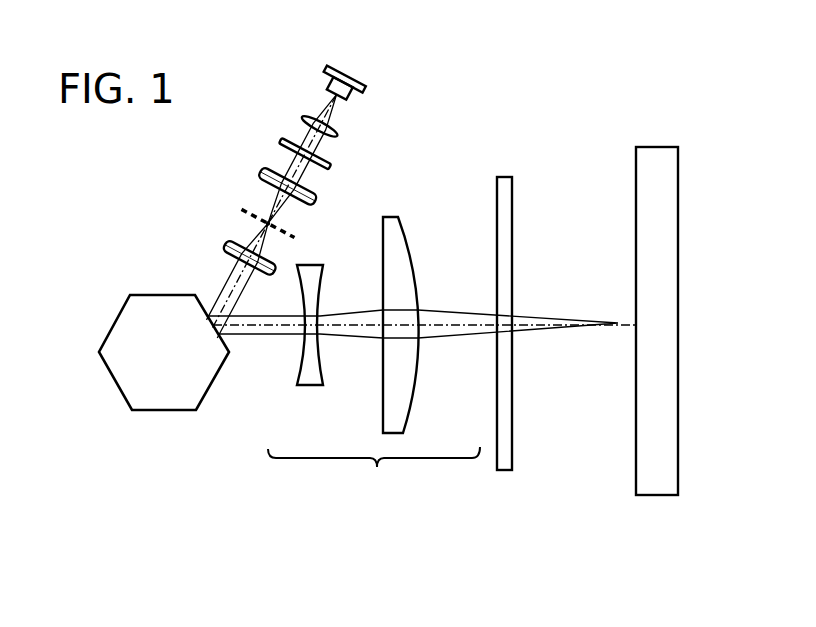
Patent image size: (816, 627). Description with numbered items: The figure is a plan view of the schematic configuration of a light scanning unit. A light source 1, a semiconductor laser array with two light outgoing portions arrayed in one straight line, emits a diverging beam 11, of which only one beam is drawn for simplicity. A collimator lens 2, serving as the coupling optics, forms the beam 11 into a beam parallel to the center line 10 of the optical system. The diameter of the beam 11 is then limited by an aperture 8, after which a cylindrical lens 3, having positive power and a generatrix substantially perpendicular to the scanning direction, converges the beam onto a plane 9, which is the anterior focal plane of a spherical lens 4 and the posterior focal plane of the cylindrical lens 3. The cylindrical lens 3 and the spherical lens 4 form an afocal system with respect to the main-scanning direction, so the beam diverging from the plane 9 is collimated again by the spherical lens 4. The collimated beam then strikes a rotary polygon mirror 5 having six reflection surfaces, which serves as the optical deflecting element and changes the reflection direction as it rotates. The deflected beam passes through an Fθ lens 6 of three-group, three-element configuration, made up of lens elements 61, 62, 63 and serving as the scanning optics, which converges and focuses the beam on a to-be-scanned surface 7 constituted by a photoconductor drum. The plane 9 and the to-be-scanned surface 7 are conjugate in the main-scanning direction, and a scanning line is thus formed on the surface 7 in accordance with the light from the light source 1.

The light source 1 is at (346, 76).
The paraxial ray of a beam 11 is at (317, 110).
The collimator lens 2 is at (307, 118).
The aperture 8 is at (283, 143).
The cylindrical lens 3 is at (268, 175).
The anterior focal plane of the spherical lens 9 is at (245, 210).
The spherical lens 4 is at (230, 248).
The rotary polygon mirror 5 is at (168, 308).
The center line of the optical system 10 is at (468, 317).
The Fθ lens 6 is at (390, 338).
The first element of the Fθ lens 61 is at (312, 386).
The second element of the Fθ lens 62 is at (393, 413).
The third element of the Fθ lens 63 is at (503, 400).
The to-be-scanned surface 7 is at (647, 220).